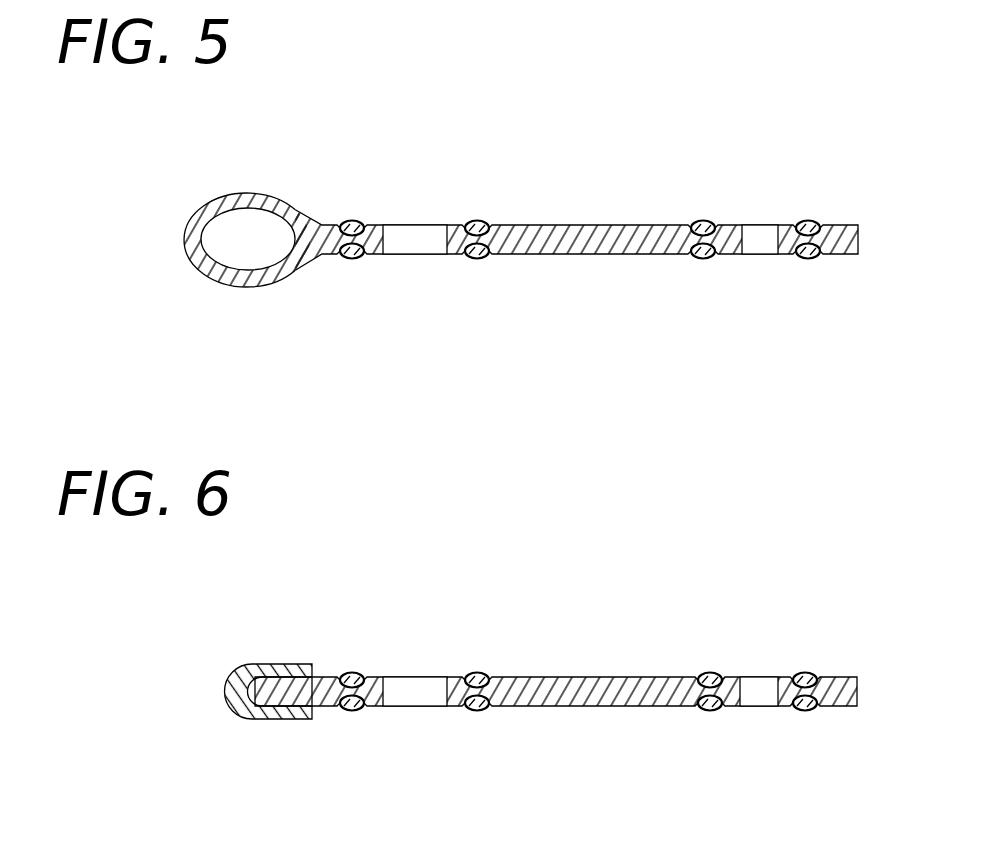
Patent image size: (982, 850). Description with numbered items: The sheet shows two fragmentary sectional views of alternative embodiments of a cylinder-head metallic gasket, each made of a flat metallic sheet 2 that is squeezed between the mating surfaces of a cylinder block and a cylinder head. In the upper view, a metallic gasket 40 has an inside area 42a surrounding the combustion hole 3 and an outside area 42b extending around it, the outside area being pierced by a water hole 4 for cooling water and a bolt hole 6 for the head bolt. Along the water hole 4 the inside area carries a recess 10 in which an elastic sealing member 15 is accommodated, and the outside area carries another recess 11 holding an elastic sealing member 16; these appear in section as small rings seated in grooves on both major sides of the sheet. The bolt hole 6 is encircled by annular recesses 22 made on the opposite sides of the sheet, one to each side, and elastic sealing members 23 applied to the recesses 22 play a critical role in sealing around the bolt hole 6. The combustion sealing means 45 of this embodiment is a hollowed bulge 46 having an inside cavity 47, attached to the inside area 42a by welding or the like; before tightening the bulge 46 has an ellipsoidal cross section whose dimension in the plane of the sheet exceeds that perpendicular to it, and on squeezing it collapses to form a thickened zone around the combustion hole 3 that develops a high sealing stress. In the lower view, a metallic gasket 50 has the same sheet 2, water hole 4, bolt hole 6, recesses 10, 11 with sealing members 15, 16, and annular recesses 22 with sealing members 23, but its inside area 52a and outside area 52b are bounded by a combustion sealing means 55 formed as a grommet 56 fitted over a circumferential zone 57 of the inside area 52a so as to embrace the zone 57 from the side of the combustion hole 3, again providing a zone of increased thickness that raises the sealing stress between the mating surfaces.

In FIG. 5, the flat metallic sheet 2 is at (622, 222).
In FIG. 6, the flat metallic sheet 2 is at (584, 672).
In FIG. 5, the combustion hole 3 is at (186, 242).
In FIG. 6, the combustion hole 3 is at (225, 690).
In FIG. 5, the water hole 4 is at (410, 237).
In FIG. 6, the water hole 4 is at (420, 688).
In FIG. 5, the bolt hole 6 is at (762, 230).
In FIG. 6, the bolt hole 6 is at (760, 688).
In FIG. 5, the groove or recess 10 is at (347, 220).
In FIG. 6, the groove or recess 10 is at (350, 675).
In FIG. 5, the groove or recess 11 is at (470, 222).
In FIG. 6, the groove or recess 11 is at (478, 675).
In FIG. 5, the elastic sealing member 15 is at (358, 220).
In FIG. 6, the elastic sealing member 15 is at (358, 675).
In FIG. 5, the elastic sealing member 16 is at (484, 222).
In FIG. 6, the elastic sealing member 16 is at (487, 675).
In FIG. 5, the annular recess 22 is at (703, 218).
In FIG. 6, the annular recess 22 is at (708, 673).
In FIG. 5, the elastic sealing member 23 is at (812, 218).
In FIG. 6, the elastic sealing member 23 is at (805, 673).
In FIG. 5, the metallic gasket 40 is at (553, 208).
In FIG. 5, the inside area 42a is at (321, 250).
In FIG. 5, the outside area 42b is at (590, 252).
In FIG. 5, the combustion sealing means 45 is at (258, 182).
In FIG. 5, the hollowed bulge 46 is at (242, 205).
In FIG. 5, the inside cavity 47 is at (228, 228).
In FIG. 6, the metallic gasket 50 is at (454, 655).
In FIG. 6, the inside area 52a is at (333, 708).
In FIG. 6, the outside area 52b is at (600, 692).
In FIG. 6, the combustion sealing means 55 is at (287, 655).
In FIG. 6, the grommet 56 is at (253, 665).
In FIG. 6, the circumferential zone 57 is at (264, 720).